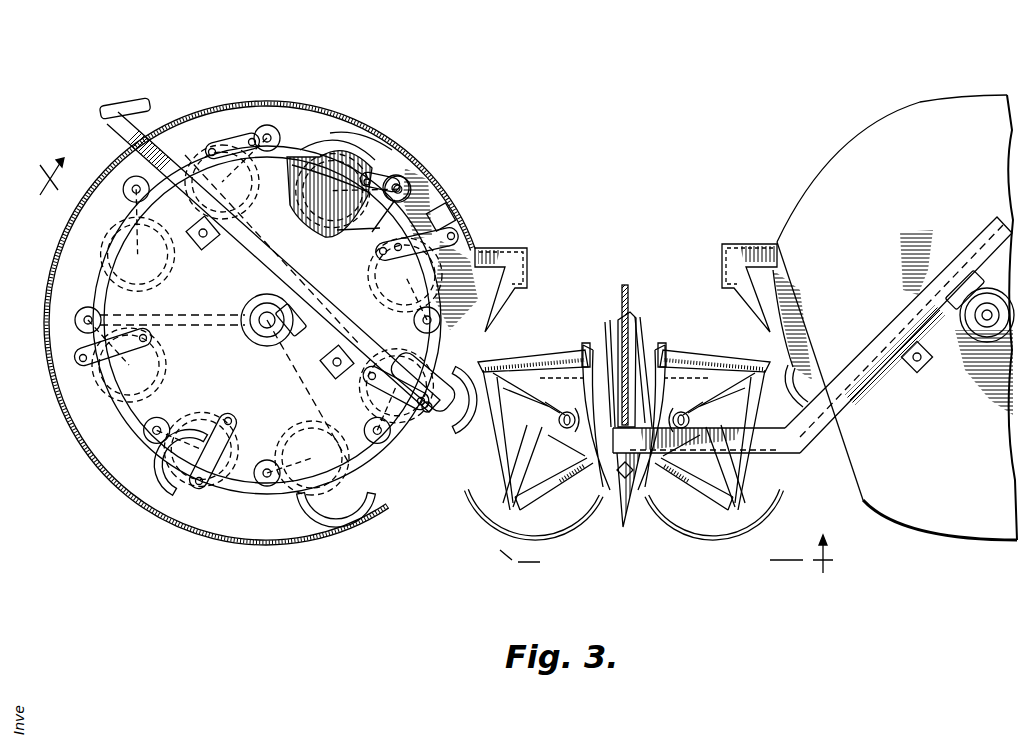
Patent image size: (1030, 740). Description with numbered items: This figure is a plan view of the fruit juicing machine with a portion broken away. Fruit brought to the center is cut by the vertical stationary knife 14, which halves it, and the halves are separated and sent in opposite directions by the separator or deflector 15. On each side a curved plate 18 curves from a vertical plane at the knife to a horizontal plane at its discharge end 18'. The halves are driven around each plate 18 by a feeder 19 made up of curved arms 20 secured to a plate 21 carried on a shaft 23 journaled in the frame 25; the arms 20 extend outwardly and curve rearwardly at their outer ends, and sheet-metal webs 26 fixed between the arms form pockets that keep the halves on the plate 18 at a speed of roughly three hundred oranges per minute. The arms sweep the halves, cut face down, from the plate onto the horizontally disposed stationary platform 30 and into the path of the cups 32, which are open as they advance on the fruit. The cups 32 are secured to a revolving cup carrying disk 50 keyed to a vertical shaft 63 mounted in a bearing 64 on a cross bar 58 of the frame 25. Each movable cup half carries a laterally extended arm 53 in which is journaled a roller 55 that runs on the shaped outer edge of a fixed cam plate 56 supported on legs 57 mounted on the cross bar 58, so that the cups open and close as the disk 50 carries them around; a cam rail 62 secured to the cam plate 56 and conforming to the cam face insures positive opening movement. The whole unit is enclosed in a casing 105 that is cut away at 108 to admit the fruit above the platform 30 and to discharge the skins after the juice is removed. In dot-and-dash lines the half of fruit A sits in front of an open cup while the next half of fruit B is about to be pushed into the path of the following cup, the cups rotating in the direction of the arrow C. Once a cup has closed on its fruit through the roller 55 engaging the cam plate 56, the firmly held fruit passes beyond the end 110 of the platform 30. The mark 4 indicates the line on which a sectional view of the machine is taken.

The section line 4- 4 is at (429, 372).
The vertical stationary knife 14 is at (627, 295).
The separator or deflector 15 is at (637, 342).
The curved plate 18 is at (624, 528).
The discharge end 18' is at (632, 496).
The feeder 19 is at (565, 348).
The curved arms 20 is at (590, 350).
The plate 21 is at (548, 430).
The shaft 23 is at (556, 421).
The frame 25 is at (116, 112).
The webs 26 is at (565, 380).
The stationary platform 30 is at (395, 160).
The cups 32 is at (214, 148).
The revolving cup carrying disk 50 is at (318, 170).
The laterally extended arm 53 is at (238, 148).
The roller 55 is at (266, 136).
The fixed cam plate 56 is at (388, 195).
The legs 57 is at (204, 252).
The cross bar 58 is at (252, 256).
The cam rail 62 is at (443, 214).
The vertical shaft 63 is at (250, 310).
The bearing 64 is at (262, 333).
The casing 105 is at (226, 102).
The cut away 108 is at (393, 505).
The end of the platform 110 is at (338, 130).
The half of fruit A is at (497, 330).
The next half of fruit B is at (450, 520).
The arrow C is at (72, 290).